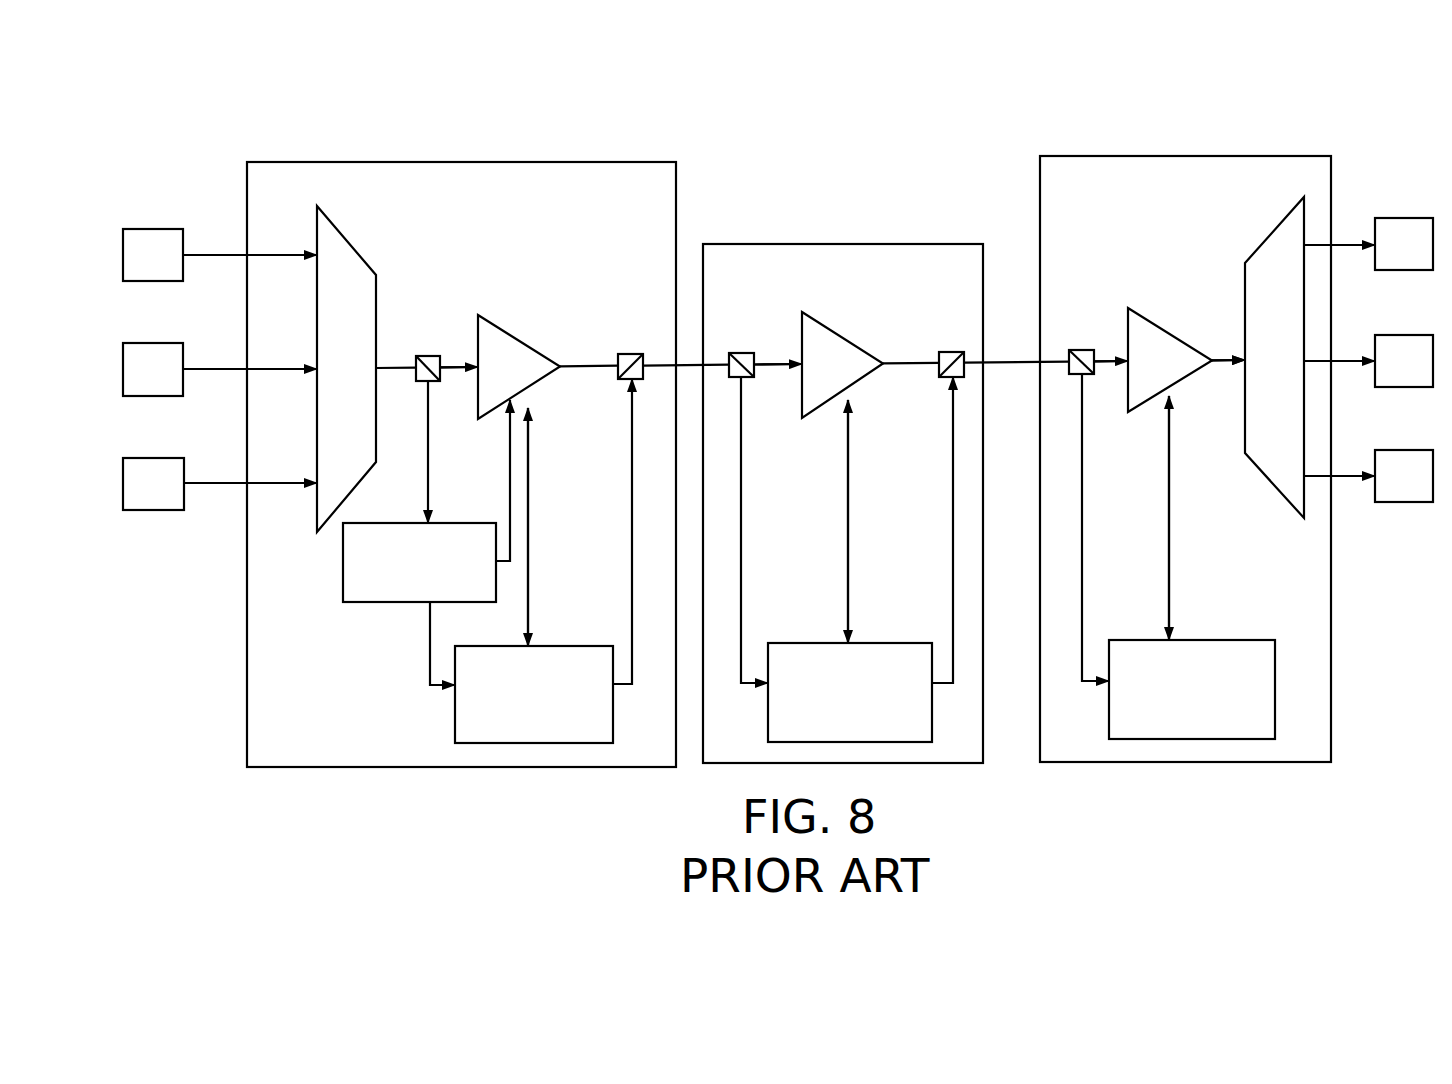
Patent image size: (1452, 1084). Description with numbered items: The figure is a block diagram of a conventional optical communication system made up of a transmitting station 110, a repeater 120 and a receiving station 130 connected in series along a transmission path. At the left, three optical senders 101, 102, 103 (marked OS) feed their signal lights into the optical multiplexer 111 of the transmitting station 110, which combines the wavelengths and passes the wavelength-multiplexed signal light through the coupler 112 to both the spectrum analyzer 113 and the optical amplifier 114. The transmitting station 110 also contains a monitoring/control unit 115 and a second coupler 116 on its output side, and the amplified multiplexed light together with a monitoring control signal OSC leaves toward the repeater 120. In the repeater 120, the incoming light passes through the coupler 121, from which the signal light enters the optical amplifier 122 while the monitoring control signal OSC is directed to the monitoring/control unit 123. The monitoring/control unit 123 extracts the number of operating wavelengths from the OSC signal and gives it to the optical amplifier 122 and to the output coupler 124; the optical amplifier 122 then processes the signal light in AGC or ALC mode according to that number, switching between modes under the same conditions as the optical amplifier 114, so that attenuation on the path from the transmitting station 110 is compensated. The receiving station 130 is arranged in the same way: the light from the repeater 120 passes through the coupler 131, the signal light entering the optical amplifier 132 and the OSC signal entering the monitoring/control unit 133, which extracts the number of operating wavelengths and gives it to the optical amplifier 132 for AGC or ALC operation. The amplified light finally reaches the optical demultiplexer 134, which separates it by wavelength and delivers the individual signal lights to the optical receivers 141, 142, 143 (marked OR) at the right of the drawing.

The optical sender 101 is at (130, 229).
The optical sender 102 is at (130, 343).
The optical sender 103 is at (130, 458).
The transmitting station 110 is at (289, 162).
The optical multiplexer 111 is at (350, 240).
The coupler 112 is at (428, 356).
The spectrum analyzer 113 is at (383, 602).
The optical amplifier 114 is at (517, 338).
The monitoring/control unit 115 is at (554, 646).
The coupler 116 is at (630, 354).
The repeater 120 is at (780, 244).
The coupler 121 is at (740, 353).
The optical amplifier 122 is at (840, 338).
The monitoring/control unit 123 is at (878, 643).
The coupler 124 is at (951, 352).
The receiving station 130 is at (1105, 156).
The coupler 131 is at (1081, 350).
The optical amplifier 132 is at (1165, 332).
The monitoring/control unit 133 is at (1203, 640).
The optical demultiplexer 134 is at (1278, 225).
The optical receiver 141 is at (1380, 218).
The optical receiver 142 is at (1380, 335).
The optical receiver 143 is at (1380, 450).